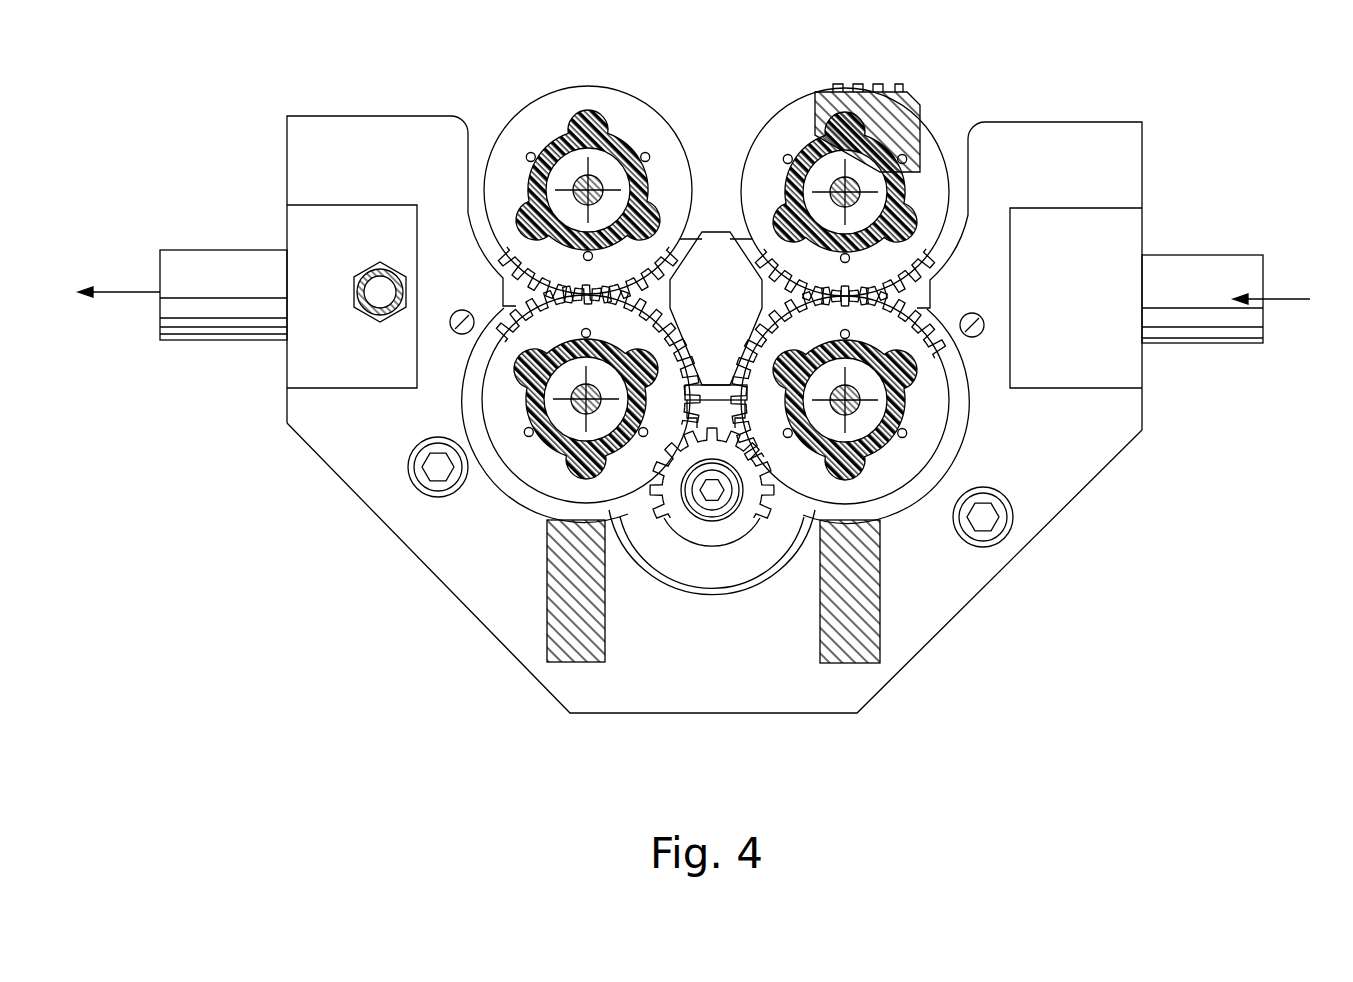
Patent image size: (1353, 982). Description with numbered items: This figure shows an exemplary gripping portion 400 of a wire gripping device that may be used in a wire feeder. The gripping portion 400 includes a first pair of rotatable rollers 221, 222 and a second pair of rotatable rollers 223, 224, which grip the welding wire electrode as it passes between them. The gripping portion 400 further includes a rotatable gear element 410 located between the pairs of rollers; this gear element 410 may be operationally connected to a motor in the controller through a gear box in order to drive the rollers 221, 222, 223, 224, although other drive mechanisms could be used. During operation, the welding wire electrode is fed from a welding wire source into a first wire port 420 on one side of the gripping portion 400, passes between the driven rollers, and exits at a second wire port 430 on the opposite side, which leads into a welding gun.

The gripping portion 400 is at (975, 71).
The rotatable roller 221 is at (550, 92).
The rotatable roller 222 is at (500, 490).
The rotatable roller 223 is at (792, 93).
The rotatable roller 224 is at (905, 515).
The rotatable gear element 410 is at (688, 593).
The first wire port 420 is at (1190, 255).
The second wire port 430 is at (210, 250).